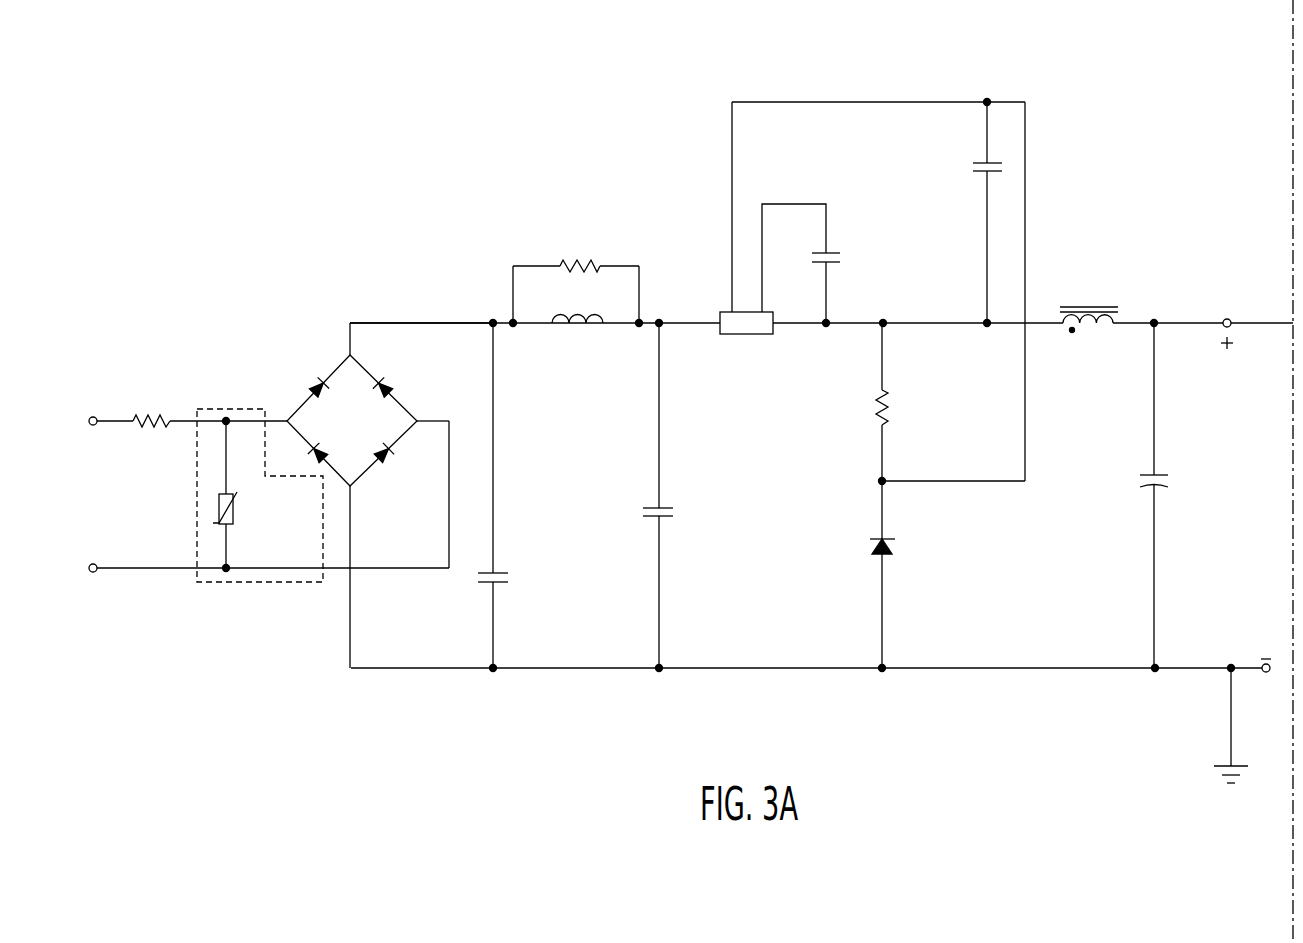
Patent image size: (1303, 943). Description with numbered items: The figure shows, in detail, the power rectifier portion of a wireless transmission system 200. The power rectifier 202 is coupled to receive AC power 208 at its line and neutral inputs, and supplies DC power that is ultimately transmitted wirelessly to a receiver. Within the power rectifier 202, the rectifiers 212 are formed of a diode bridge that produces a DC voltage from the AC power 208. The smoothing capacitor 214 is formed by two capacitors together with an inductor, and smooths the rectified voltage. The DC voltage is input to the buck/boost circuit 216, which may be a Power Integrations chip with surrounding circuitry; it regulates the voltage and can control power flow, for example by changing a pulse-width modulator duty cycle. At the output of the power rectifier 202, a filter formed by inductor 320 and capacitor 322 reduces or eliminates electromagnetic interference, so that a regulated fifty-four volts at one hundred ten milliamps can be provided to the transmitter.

The system 200 is at (282, 128).
The power rectifier 202 is at (416, 298).
The AC power 208 is at (92, 473).
The rectifiers 212 is at (328, 334).
The smoothing capacitor 214 is at (482, 588).
The buck/boost/flyback circuit 216 is at (712, 221).
The inductor 320 is at (1095, 300).
The capacitor 322 is at (1180, 484).